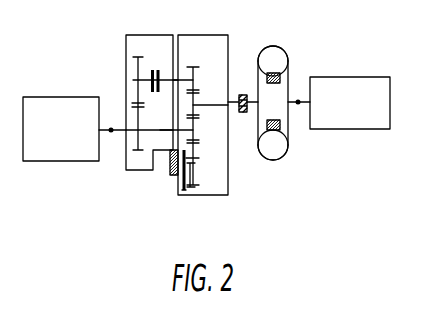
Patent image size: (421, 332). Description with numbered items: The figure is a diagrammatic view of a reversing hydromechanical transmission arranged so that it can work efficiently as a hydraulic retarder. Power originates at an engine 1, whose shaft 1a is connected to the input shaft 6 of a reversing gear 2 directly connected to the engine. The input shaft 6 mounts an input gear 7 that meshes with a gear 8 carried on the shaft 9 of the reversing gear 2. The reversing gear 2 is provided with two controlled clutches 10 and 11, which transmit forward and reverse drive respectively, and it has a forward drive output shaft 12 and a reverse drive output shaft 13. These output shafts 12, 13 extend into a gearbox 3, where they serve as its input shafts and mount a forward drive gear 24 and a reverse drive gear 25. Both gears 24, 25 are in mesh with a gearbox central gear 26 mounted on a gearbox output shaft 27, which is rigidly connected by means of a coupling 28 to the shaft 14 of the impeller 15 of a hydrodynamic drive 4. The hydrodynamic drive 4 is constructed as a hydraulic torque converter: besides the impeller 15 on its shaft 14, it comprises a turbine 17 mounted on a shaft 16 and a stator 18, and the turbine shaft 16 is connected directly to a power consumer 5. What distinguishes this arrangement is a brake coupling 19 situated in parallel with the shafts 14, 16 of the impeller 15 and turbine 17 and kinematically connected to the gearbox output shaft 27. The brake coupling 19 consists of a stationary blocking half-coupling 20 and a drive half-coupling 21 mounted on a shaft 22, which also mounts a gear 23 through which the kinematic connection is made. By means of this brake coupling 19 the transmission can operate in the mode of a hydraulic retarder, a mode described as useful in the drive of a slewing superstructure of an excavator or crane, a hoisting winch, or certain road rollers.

The engine 1 is at (70, 164).
The shaft of the engine 1a is at (107, 110).
The reversing gear 2 is at (131, 171).
The gearbox 3 is at (228, 193).
The hydrodynamic drive 4 is at (282, 161).
The power consumer 5 is at (363, 130).
The input shaft 6 is at (118, 125).
The input gear 7 is at (133, 140).
The gear 8 is at (137, 57).
The shaft of the reversing gear 9 is at (133, 74).
The controlled clutch 10 is at (152, 112).
The controlled clutch 11 is at (160, 64).
The forward drive output shaft 12 is at (166, 141).
The reverse drive output shaft 13 is at (173, 64).
The shaft 14 is at (253, 102).
The impeller 15 is at (266, 49).
The shaft 16 is at (290, 116).
The turbine 17 is at (277, 48).
The stator 18 is at (273, 73).
The brake coupling 19 is at (183, 191).
The stationary blocking half-coupling 20 is at (177, 181).
The drive half-coupling 21 is at (196, 188).
The shaft 22 is at (191, 162).
The gear 23 is at (191, 158).
The forward drive gear 24 is at (194, 141).
The reverse drive gear 25 is at (197, 72).
The gearbox central gear 26 is at (196, 101).
The gearbox output shaft 27 is at (229, 97).
The coupling 28 is at (240, 113).